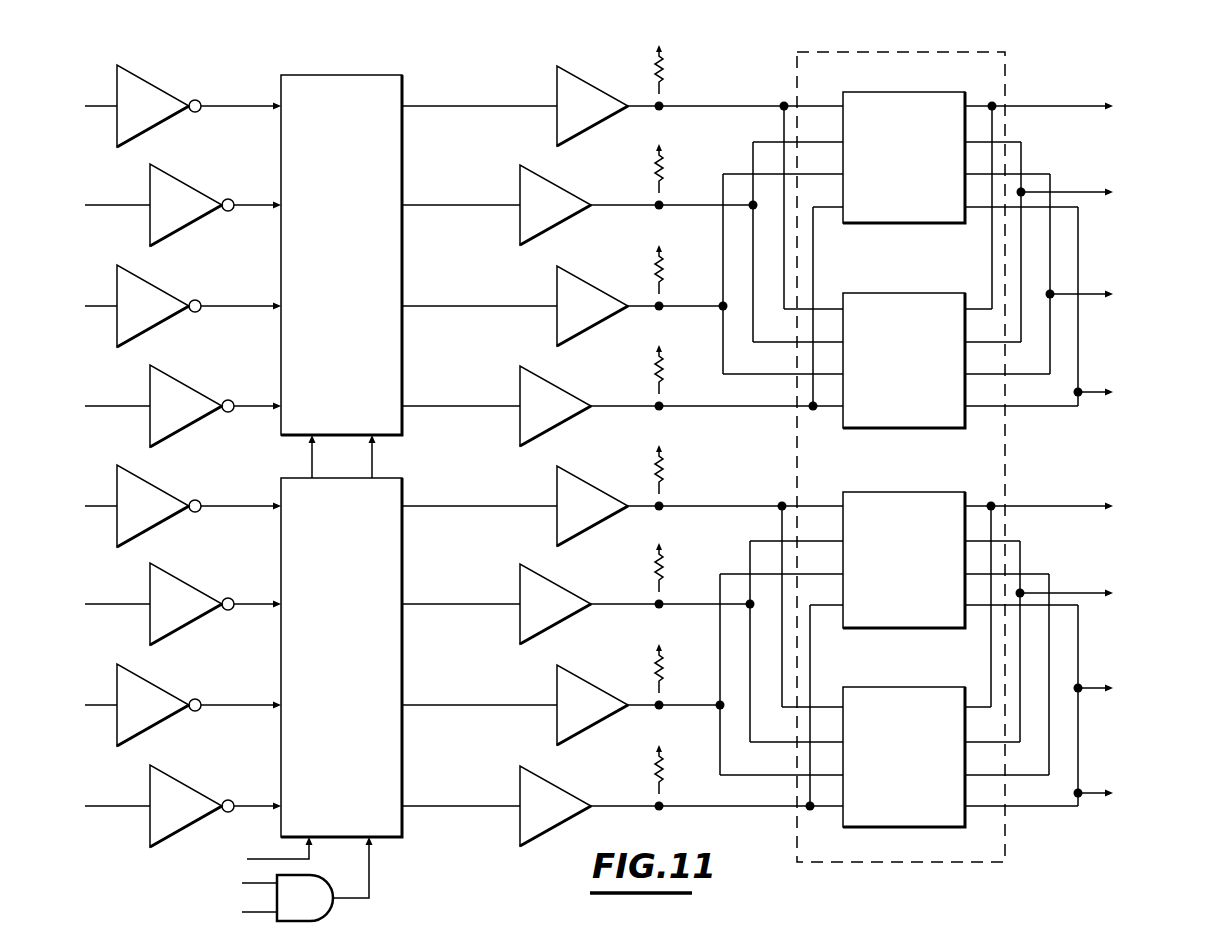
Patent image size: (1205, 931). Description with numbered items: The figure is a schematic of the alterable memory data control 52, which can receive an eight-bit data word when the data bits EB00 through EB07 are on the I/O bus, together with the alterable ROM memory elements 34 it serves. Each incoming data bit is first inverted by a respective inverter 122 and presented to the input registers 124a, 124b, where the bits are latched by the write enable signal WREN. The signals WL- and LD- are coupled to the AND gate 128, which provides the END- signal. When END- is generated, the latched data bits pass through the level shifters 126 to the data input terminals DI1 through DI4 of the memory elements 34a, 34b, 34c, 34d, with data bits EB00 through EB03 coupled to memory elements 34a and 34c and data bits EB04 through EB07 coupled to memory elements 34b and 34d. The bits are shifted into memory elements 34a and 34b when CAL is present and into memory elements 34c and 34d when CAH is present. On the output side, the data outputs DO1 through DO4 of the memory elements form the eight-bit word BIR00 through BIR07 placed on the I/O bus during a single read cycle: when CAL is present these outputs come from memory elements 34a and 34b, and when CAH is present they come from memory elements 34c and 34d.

The data control 52 is at (454, 56).
The inverter 122 is at (168, 89).
The input register 124a is at (366, 267).
The input register 124b is at (366, 664).
The level shifter 126 is at (603, 90).
The AND gate 128 is at (313, 909).
The memory element 34 is at (950, 48).
The memory element 34a is at (920, 170).
The memory element 34b is at (918, 370).
The memory element 34c is at (916, 569).
The memory element 34d is at (916, 771).